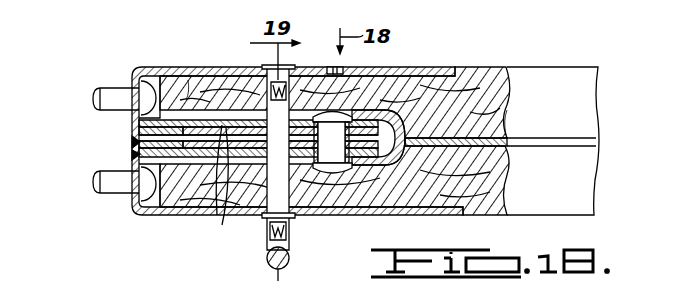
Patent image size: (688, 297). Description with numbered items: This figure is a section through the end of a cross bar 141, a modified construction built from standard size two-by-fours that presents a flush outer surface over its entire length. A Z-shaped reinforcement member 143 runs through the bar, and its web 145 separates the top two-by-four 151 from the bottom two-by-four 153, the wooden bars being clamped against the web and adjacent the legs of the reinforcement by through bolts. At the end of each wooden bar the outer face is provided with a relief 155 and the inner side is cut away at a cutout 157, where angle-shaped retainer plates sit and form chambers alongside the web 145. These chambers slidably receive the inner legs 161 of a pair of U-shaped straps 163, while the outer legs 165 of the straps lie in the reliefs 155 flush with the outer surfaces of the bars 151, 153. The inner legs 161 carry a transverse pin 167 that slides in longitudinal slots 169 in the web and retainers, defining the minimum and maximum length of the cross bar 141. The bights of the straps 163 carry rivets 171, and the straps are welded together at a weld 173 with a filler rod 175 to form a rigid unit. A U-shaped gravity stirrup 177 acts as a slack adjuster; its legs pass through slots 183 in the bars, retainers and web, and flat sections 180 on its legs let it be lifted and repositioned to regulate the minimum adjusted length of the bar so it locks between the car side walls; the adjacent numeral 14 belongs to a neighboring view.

The wall panel assembly 14 is at (656, 296).
The cross bar 141 is at (501, 65).
The Z-shaped reinforcement member 143 is at (510, 138).
The web 145 is at (507, 107).
The top 2 x 4 151 is at (460, 135).
The bottom 2 x 4 153 is at (505, 212).
The relief 155 is at (462, 67).
The cutout 157 is at (186, 100).
The inner leg 161 is at (133, 128).
The U-shaped strap 163 is at (137, 72).
The outer leg 165 is at (205, 66).
The transverse pin 167 is at (340, 172).
The longitudinal slot 169 is at (217, 215).
The rivet 171 is at (93, 97).
The weld 173 is at (130, 146).
The filler rod 175 is at (132, 150).
The U-shaped gravity stirrup 177 is at (267, 258).
The flat section 180 is at (280, 88).
The slot 183 is at (252, 84).